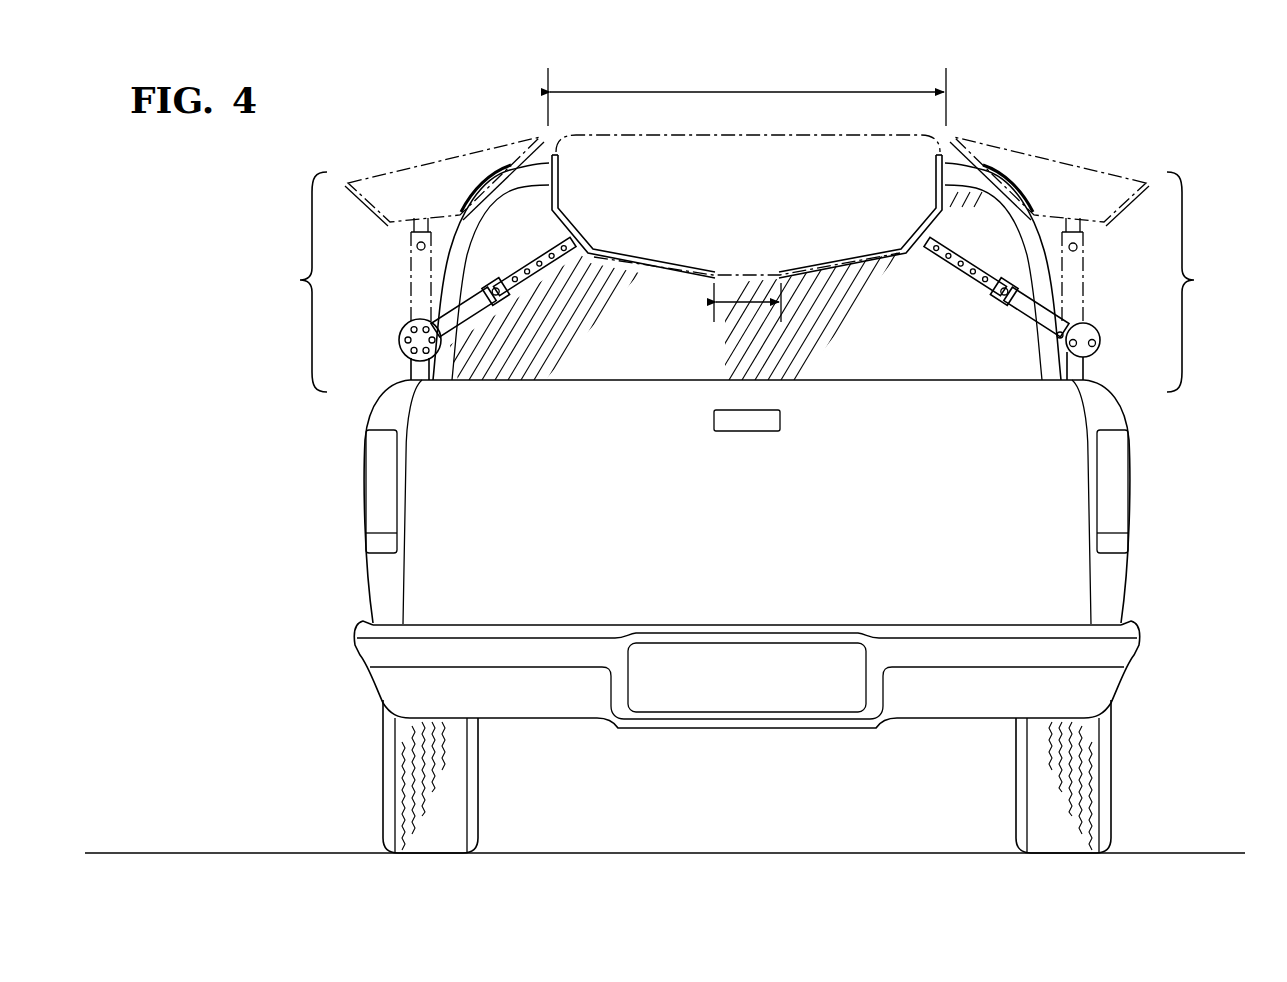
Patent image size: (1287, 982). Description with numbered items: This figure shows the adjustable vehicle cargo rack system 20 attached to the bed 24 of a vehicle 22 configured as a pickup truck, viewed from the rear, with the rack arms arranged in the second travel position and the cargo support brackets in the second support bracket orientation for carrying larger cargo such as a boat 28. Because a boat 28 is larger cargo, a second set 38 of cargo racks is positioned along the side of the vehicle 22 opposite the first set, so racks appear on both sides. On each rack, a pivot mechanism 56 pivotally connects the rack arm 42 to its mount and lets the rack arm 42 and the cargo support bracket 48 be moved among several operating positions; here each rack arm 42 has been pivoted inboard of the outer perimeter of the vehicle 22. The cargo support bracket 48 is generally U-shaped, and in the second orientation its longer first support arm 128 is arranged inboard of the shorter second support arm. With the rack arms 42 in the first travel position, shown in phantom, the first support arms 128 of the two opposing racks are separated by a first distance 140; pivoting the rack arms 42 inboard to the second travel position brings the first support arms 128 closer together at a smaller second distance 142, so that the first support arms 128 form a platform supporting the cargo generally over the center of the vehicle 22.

The adjustable vehicle cargo rack system 20 is at (435, 129).
The vehicle 22 is at (1124, 407).
The bed 24 is at (1135, 578).
The boat 28 is at (745, 128).
The second set of cargo racks 38 is at (746, 282).
The rack arm 42 is at (482, 328).
The cargo support bracket 48 is at (653, 272).
The pivot mechanism 56 is at (398, 322).
The first support arm 128 is at (522, 158).
The first distance 140 is at (704, 92).
The second distance 142 is at (745, 316).